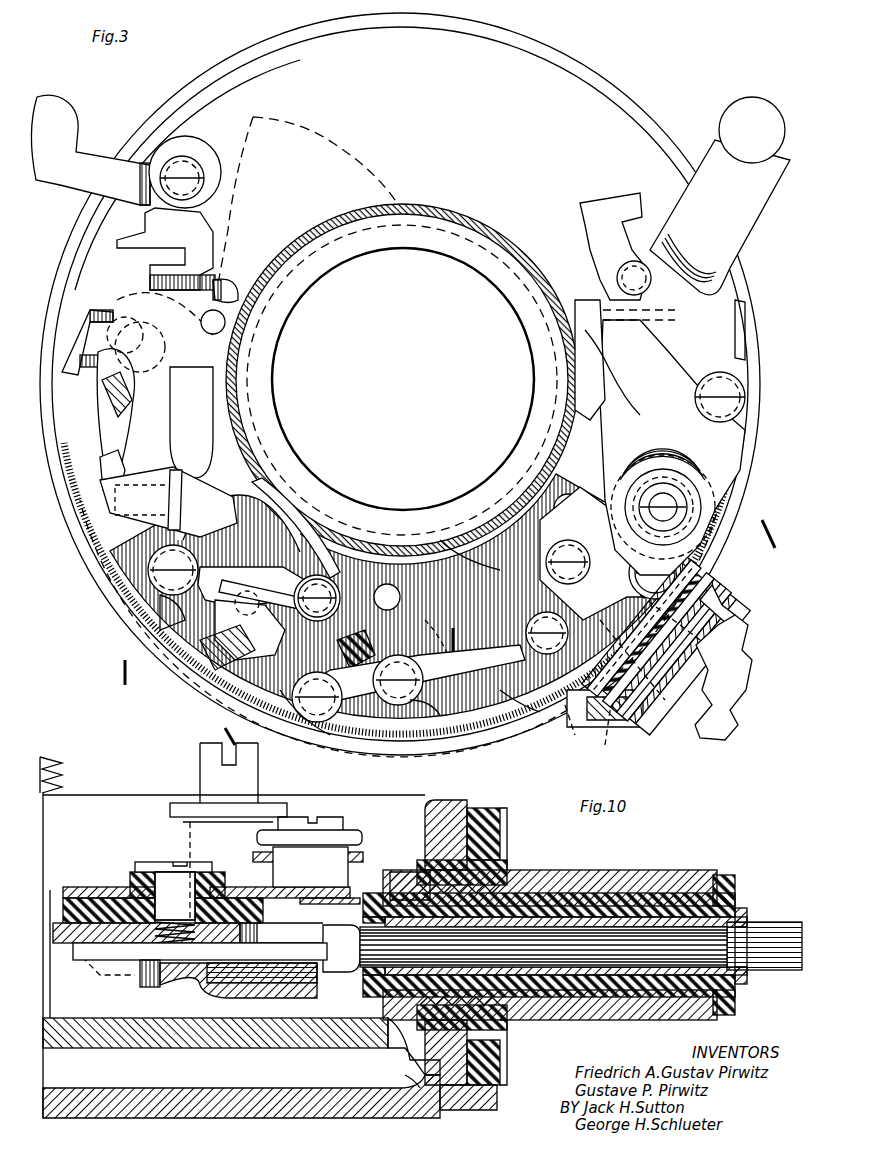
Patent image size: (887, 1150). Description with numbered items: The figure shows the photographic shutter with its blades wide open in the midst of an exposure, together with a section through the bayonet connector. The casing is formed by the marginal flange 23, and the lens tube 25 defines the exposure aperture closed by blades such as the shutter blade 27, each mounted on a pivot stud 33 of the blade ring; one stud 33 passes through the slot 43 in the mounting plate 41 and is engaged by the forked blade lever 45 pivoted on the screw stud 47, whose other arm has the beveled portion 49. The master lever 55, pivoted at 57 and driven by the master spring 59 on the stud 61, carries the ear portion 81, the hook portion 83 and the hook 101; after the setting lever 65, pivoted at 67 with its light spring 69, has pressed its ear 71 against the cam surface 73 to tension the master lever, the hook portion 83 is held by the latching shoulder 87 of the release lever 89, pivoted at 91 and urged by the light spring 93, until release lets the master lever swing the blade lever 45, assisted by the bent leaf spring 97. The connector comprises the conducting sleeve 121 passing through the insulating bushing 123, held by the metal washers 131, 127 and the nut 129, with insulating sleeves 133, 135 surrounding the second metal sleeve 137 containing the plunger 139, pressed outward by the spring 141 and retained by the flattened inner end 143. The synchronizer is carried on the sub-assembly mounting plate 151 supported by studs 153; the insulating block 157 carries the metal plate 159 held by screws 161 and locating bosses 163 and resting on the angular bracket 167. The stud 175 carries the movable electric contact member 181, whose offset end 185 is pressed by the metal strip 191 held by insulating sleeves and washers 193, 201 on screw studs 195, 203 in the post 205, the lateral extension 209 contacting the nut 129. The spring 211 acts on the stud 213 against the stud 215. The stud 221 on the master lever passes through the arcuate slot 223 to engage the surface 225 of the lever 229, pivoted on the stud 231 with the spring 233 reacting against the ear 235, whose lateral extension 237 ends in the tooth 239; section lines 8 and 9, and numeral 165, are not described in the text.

In FIG. 3, the section line 8 is at (700, 530).
In FIG. 3, the section line 9 is at (290, 652).
In FIG. 3, the marginal flange 23 is at (628, 104).
In FIG. 10, the marginal flange 23 is at (455, 805).
In FIG. 3, the lens tube 25 is at (515, 265).
In FIG. 3, the shutter blade 27 is at (335, 148).
In FIG. 3, the pivot stud 33 is at (226, 322).
In FIG. 3, the mounting plate 41 is at (100, 525).
In FIG. 10, the mounting plate 41 is at (255, 1050).
In FIG. 3, the slot 43 is at (252, 365).
In FIG. 3, the blade lever 45 is at (166, 305).
In FIG. 3, the screw stud 47 is at (155, 397).
In FIG. 3, the beveled portion 49 is at (110, 410).
In FIG. 3, the master lever 55 is at (725, 452).
In FIG. 10, the master lever 55 is at (222, 998).
In FIG. 3, the pivot 57 is at (672, 498).
In FIG. 10, the pivot 57 is at (190, 830).
In FIG. 3, the master spring 59 is at (743, 345).
In FIG. 3, the stud 61 is at (746, 400).
In FIG. 3, the setting lever 65 is at (748, 215).
In FIG. 3, the pivot 67 is at (590, 340).
In FIG. 3, the light spring 69 is at (575, 420).
In FIG. 3, the ear 71 is at (612, 300).
In FIG. 3, the cam surface 73 is at (585, 246).
In FIG. 3, the ear portion 81 is at (80, 380).
In FIG. 3, the hook portion 83 is at (100, 310).
In FIG. 3, the latching shoulder 87 is at (150, 252).
In FIG. 3, the release lever 89 is at (78, 160).
In FIG. 3, the pivot 91 is at (205, 170).
In FIG. 3, the light spring 93 is at (225, 90).
In FIG. 3, the bent leaf spring 97 is at (118, 465).
In FIG. 3, the hook 101 is at (232, 284).
In FIG. 3, the conducting sleeve 121 is at (740, 700).
In FIG. 10, the conducting sleeve 121 is at (570, 872).
In FIG. 10, the insulating bushing 123 is at (445, 1100).
In FIG. 3, the metal washer 127 is at (432, 636).
In FIG. 10, the metal washer 127 is at (410, 1070).
In FIG. 3, the nut 129 is at (660, 695).
In FIG. 10, the nut 129 is at (395, 1045).
In FIG. 10, the metal washer 131 is at (505, 840).
In FIG. 10, the insulating sleeve 133 is at (650, 1000).
In FIG. 10, the insulating sleeve 135 is at (580, 984).
In FIG. 10, the second metal sleeve 137 is at (705, 1000).
In FIG. 10, the plunger 139 is at (768, 920).
In FIG. 10, the spring 141 is at (747, 975).
In FIG. 10, the flattened inner end 143 is at (345, 972).
In FIG. 3, the sub-assembly mounting plate 151 is at (598, 474).
In FIG. 10, the sub-assembly mounting plate 151 is at (105, 972).
In FIG. 3, the studs 153 is at (80, 640).
In FIG. 3, the insulating block 157 is at (540, 530).
In FIG. 10, the insulating block 157 is at (125, 890).
In FIG. 3, the metal plate 159 is at (545, 520).
In FIG. 10, the metal plate 159 is at (90, 888).
In FIG. 3, the screws 161 is at (545, 615).
In FIG. 10, the screws 161 is at (175, 880).
In FIG. 3, the locating bosses 163 is at (549, 562).
In FIG. 3, the lever 165 is at (308, 728).
In FIG. 3, the angular bracket 167 is at (700, 598).
In FIG. 10, the angular bracket 167 is at (330, 903).
In FIG. 3, the stud 175 is at (385, 725).
In FIG. 3, the movable electric contact member 181 is at (412, 672).
In FIG. 3, the offset end 185 is at (318, 722).
In FIG. 3, the metal strip 191 is at (505, 720).
In FIG. 10, the metal strip 191 is at (362, 852).
In FIG. 3, the insulating sleeves and washers 193 is at (160, 575).
In FIG. 3, the screw stud 195 is at (175, 610).
In FIG. 3, the insulating sleeves and washers 201 is at (690, 562).
In FIG. 10, the insulating sleeves and washers 201 is at (355, 830).
In FIG. 3, the screw stud 203 is at (700, 585).
In FIG. 10, the screw stud 203 is at (328, 820).
In FIG. 10, the post 205 is at (273, 873).
In FIG. 3, the lateral extension 209 is at (735, 668).
In FIG. 10, the lateral extension 209 is at (395, 881).
In FIG. 3, the spring 211 is at (418, 735).
In FIG. 3, the stud 213 is at (360, 638).
In FIG. 3, the stud 215 is at (468, 546).
In FIG. 3, the stud 221 is at (215, 660).
In FIG. 3, the arcuate slot 223 is at (168, 498).
In FIG. 3, the surface 225 is at (254, 575).
In FIG. 3, the lever 229 is at (302, 523).
In FIG. 3, the stud 231 is at (345, 600).
In FIG. 3, the spring 233 is at (312, 536).
In FIG. 3, the ear 235 is at (305, 595).
In FIG. 3, the lateral extension 237 is at (263, 625).
In FIG. 3, the tooth 239 is at (372, 591).